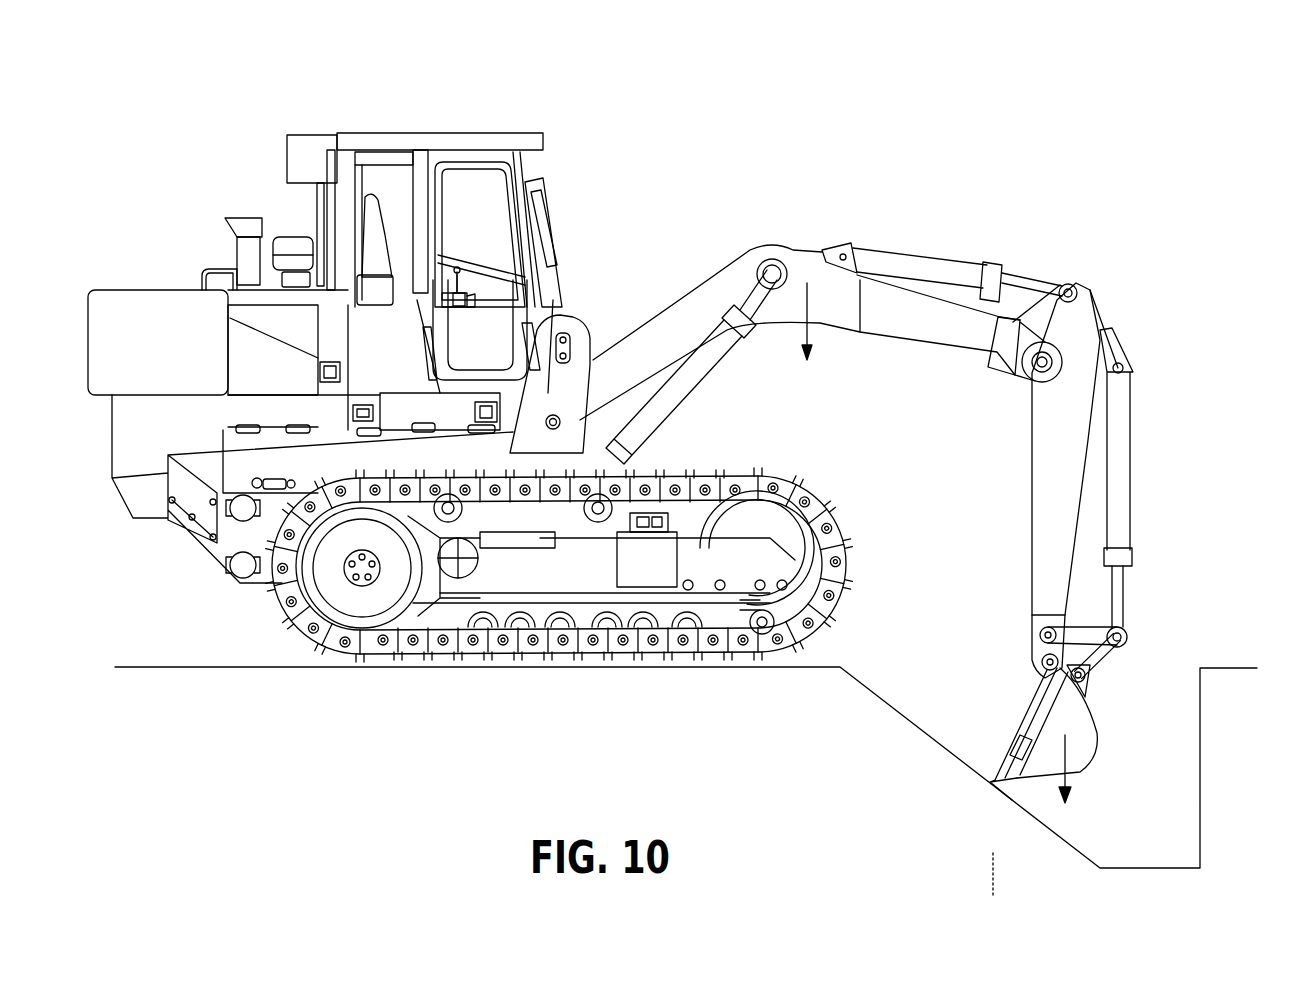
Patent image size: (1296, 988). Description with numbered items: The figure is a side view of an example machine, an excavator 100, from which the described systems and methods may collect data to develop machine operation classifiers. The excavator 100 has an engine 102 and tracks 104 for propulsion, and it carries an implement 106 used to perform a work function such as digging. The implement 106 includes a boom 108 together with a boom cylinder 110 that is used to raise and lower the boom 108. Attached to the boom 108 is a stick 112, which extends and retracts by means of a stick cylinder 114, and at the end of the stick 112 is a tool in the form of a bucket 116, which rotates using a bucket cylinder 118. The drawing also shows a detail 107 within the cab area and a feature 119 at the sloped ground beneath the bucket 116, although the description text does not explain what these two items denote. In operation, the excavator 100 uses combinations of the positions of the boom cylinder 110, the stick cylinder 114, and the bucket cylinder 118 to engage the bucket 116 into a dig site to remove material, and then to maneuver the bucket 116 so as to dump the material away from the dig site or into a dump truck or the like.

The excavator 100 is at (688, 66).
The engine 102 is at (148, 288).
The tracks 104 is at (515, 672).
The implement 106 is at (1146, 262).
The operator input device 107 is at (477, 296).
The boom 108 is at (745, 250).
The boom cylinder 110 is at (660, 410).
The stick 112 is at (1028, 408).
The stick cylinder 114 is at (1010, 270).
The bucket 116 is at (1087, 760).
The bucket cylinder 118 is at (1127, 537).
The ground surface 119 is at (897, 717).